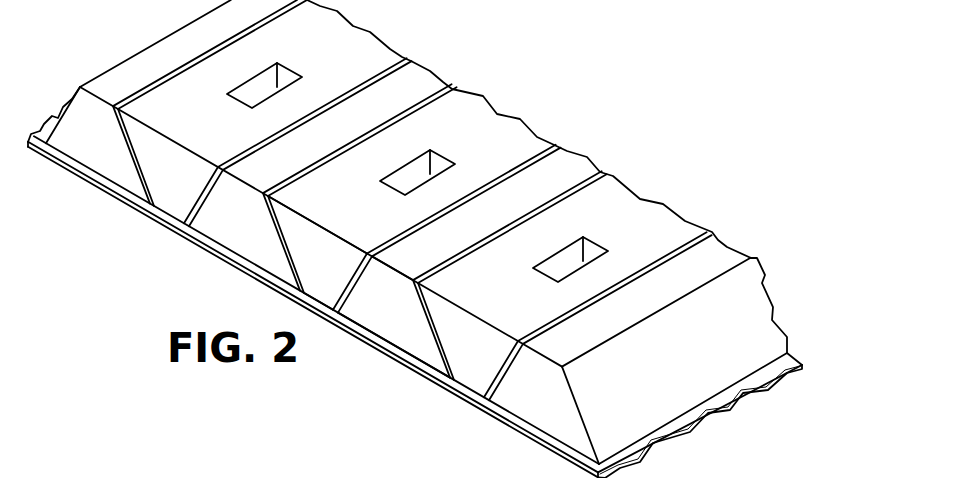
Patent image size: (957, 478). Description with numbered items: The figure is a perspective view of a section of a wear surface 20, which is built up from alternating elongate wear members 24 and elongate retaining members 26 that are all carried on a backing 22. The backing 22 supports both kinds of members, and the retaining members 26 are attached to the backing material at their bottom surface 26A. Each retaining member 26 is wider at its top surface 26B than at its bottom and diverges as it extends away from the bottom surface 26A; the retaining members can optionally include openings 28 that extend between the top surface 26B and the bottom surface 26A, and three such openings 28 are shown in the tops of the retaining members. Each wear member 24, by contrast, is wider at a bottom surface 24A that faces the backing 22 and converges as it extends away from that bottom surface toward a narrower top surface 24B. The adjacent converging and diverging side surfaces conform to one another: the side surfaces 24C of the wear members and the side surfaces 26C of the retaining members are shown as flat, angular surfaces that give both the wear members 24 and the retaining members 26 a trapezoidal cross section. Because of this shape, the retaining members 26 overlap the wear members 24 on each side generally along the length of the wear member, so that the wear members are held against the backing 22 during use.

The wear surface 20 is at (507, 104).
The backing 22 is at (530, 442).
The elongate wear member 24 is at (235, 257).
The bottom surface 24A is at (363, 331).
The top surface 24B is at (400, 271).
The side surface 24C is at (273, 223).
The retaining member 26 is at (173, 207).
The bottom surface 26A is at (325, 300).
The top surface 26B is at (327, 233).
The side surface 26C is at (212, 192).
The opening 28 is at (290, 77).